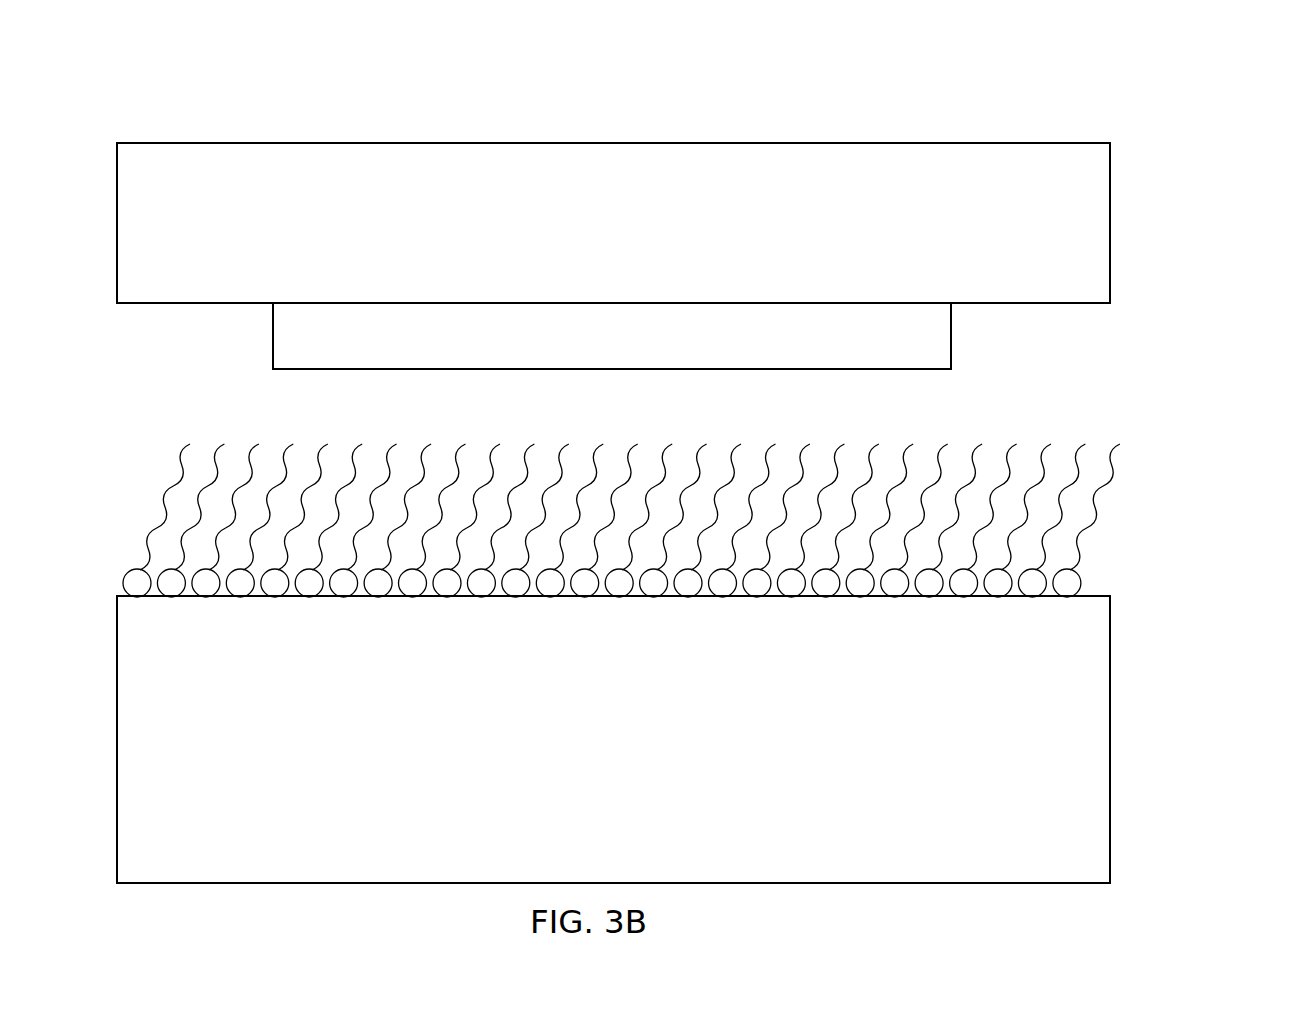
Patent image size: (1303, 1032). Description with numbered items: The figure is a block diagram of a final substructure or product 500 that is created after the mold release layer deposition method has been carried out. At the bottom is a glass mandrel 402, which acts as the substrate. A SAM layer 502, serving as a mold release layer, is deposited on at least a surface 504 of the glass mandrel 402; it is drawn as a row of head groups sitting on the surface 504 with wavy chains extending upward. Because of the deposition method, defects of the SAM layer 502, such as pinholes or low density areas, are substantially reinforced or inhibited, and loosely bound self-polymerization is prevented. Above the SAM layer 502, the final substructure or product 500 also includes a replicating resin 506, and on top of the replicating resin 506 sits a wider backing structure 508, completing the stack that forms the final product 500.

The final substructure or product 500 is at (662, 193).
The backing structure 508 is at (993, 129).
The replicating resin 506 is at (966, 352).
The SAM layer 502 is at (1099, 512).
The surface 504 is at (1094, 596).
The glass mandrel 402 is at (1119, 772).